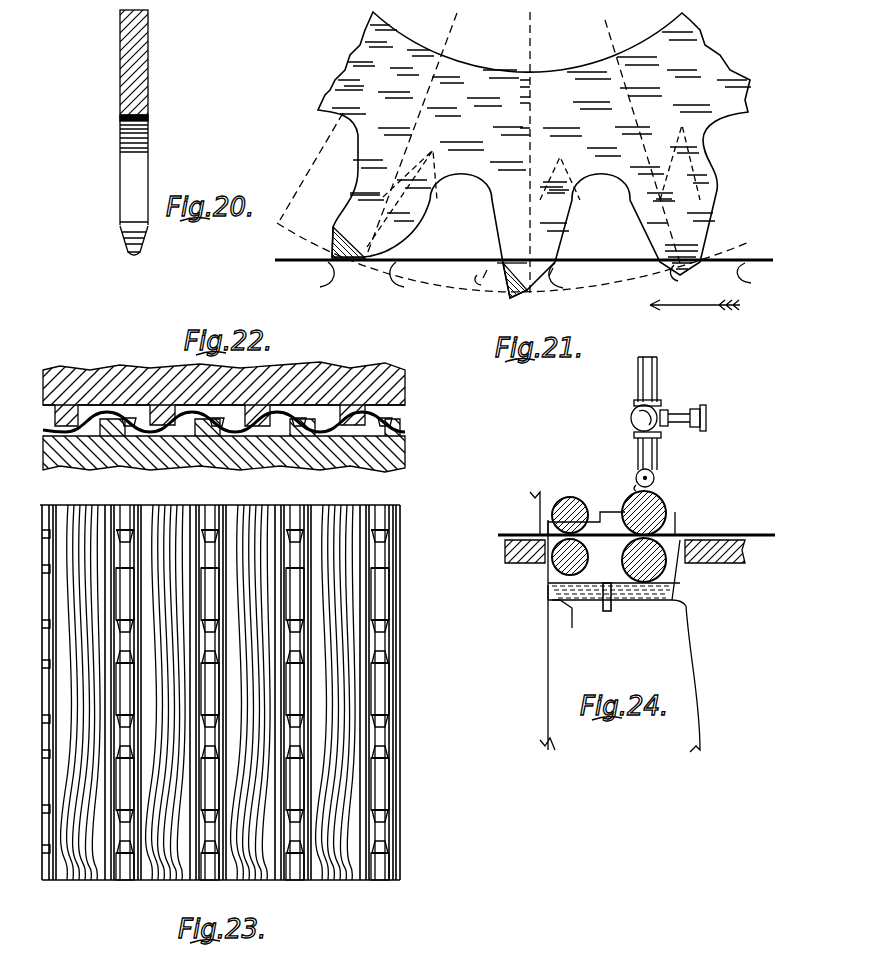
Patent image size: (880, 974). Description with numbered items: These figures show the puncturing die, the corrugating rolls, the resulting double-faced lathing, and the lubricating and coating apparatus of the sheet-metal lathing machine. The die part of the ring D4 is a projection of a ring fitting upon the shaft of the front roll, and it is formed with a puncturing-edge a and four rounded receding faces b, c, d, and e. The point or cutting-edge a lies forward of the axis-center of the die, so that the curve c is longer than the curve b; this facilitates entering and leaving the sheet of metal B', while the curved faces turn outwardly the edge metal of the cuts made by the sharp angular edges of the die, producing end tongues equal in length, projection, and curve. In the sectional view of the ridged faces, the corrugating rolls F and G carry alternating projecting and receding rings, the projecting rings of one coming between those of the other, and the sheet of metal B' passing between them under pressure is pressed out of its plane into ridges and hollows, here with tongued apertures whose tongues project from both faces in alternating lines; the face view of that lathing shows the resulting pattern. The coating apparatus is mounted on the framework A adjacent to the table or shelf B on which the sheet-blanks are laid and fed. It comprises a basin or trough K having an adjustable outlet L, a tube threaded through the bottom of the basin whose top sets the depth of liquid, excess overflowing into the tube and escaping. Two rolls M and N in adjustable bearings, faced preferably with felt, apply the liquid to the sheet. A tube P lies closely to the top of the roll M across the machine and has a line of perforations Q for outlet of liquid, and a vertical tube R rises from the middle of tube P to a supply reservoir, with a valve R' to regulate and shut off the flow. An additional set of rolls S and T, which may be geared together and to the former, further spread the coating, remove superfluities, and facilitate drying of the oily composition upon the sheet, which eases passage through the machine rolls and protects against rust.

In FIG. 20, the rounded receding face d is at (121, 241).
In FIG. 20, the rounded receding face e is at (140, 241).
In FIG. 20, the puncturing-edge a is at (133, 262).
In FIG. 21, the puncturing-edge a is at (512, 291).
In FIG. 21, the die part of the ring D4 is at (514, 155).
In FIG. 21, the curved face b is at (474, 282).
In FIG. 21, the curved face c is at (545, 282).
In FIG. 21, the sheet of metal B' is at (524, 285).
In FIG. 22, the sheet of metal B' is at (241, 427).
In FIG. 24, the sheet of metal B' is at (638, 526).
In FIG. 22, the corrugating roll F is at (234, 394).
In FIG. 22, the corrugating roll G is at (235, 445).
In FIG. 24, the vertical tube R is at (636, 413).
In FIG. 24, the valve R' is at (683, 428).
In FIG. 24, the perforations Q is at (636, 485).
In FIG. 24, the tube P is at (655, 474).
In FIG. 24, the roll M is at (666, 502).
In FIG. 24, the drying roll S is at (588, 504).
In FIG. 24, the basin or trough K is at (632, 560).
In FIG. 24, the drying roll T is at (577, 559).
In FIG. 24, the framework A is at (530, 635).
In FIG. 24, the table or shelf B is at (715, 563).
In FIG. 24, the roll N is at (676, 582).
In FIG. 24, the adjustable outlet L is at (608, 614).